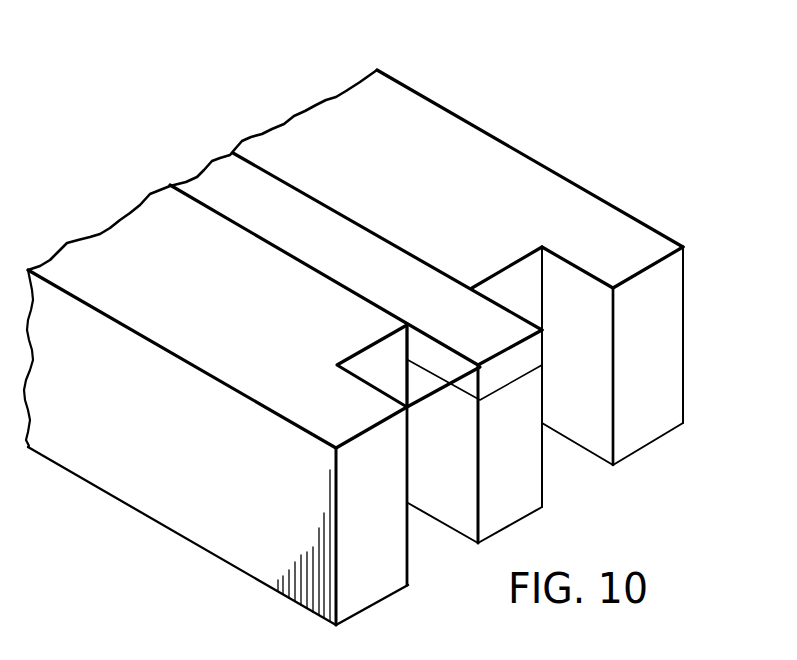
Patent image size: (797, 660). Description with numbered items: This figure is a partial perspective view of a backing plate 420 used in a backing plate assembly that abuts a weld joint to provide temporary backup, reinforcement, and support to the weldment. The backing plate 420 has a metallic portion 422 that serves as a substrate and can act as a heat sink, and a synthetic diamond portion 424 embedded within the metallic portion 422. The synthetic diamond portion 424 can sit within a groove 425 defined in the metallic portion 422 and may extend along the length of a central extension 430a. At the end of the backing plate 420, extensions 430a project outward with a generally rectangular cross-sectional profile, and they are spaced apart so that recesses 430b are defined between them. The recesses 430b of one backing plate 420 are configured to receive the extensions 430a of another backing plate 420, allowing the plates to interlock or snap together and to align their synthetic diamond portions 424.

The backing plate 420 is at (527, 153).
The metallic portion 422 is at (455, 128).
The synthetic diamond portion 424 is at (317, 213).
The groove 425 is at (428, 371).
The extension 430a is at (675, 298).
The recess 430b is at (510, 283).